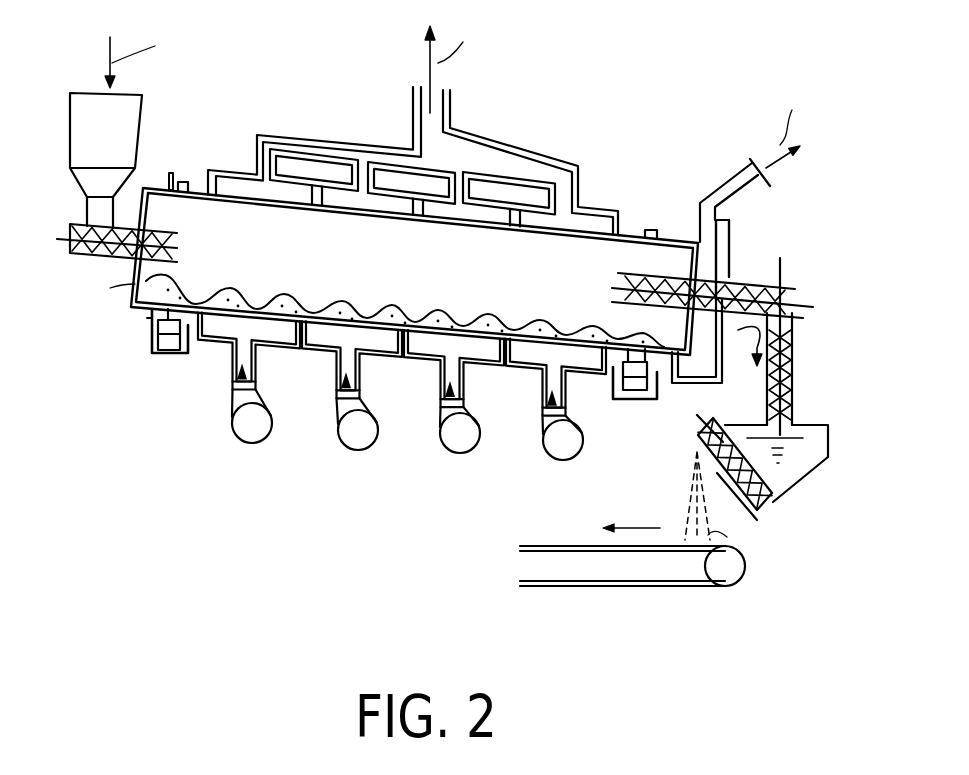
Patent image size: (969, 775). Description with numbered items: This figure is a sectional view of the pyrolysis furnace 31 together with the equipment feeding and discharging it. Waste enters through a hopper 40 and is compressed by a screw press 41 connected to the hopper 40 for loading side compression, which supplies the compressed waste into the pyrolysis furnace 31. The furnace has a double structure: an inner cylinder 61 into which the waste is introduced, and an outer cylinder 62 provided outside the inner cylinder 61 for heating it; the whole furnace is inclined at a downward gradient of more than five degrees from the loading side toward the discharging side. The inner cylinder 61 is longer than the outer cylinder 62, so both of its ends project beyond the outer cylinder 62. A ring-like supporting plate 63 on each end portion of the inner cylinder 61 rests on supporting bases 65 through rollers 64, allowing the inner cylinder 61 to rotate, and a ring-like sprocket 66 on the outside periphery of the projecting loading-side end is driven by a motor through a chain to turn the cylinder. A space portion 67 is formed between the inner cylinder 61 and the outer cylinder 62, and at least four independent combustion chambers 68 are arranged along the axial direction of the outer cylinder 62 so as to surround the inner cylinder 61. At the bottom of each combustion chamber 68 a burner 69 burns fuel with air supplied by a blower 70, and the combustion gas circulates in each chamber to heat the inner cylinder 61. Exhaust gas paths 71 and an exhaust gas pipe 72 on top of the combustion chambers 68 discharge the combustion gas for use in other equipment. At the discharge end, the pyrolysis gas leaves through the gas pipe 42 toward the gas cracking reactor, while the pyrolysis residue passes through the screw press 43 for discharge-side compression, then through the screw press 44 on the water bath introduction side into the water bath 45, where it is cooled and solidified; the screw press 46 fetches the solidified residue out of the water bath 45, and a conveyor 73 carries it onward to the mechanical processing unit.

The pyrolysis furnace 31 is at (547, 114).
The hopper 40 is at (87, 90).
The screw press 41 is at (88, 262).
The gas pipe 42 is at (708, 195).
The screw press 43 is at (736, 284).
The screw press 44 is at (797, 352).
The water bath 45 is at (810, 430).
The screw press 46 is at (775, 506).
The inner cylinder 61 is at (171, 172).
The outer cylinder 62 is at (266, 140).
The supporting plate 63 is at (214, 178).
The roller 64 is at (150, 338).
The supporting base 65 is at (160, 353).
The sprocket 66 is at (186, 182).
The space portion 67 is at (393, 143).
The combustion chamber 68 is at (272, 342).
The burner 69 is at (236, 376).
The blower 70 is at (256, 442).
The exhaust gas path 71 is at (322, 148).
The exhaust gas pipe 72 is at (447, 122).
The conveyor 73 is at (556, 546).